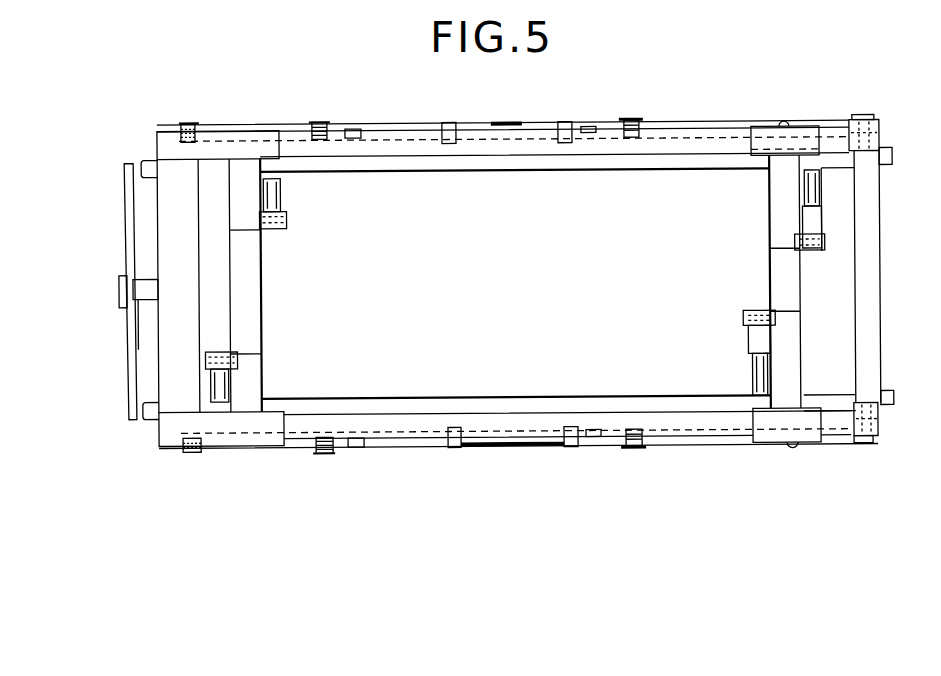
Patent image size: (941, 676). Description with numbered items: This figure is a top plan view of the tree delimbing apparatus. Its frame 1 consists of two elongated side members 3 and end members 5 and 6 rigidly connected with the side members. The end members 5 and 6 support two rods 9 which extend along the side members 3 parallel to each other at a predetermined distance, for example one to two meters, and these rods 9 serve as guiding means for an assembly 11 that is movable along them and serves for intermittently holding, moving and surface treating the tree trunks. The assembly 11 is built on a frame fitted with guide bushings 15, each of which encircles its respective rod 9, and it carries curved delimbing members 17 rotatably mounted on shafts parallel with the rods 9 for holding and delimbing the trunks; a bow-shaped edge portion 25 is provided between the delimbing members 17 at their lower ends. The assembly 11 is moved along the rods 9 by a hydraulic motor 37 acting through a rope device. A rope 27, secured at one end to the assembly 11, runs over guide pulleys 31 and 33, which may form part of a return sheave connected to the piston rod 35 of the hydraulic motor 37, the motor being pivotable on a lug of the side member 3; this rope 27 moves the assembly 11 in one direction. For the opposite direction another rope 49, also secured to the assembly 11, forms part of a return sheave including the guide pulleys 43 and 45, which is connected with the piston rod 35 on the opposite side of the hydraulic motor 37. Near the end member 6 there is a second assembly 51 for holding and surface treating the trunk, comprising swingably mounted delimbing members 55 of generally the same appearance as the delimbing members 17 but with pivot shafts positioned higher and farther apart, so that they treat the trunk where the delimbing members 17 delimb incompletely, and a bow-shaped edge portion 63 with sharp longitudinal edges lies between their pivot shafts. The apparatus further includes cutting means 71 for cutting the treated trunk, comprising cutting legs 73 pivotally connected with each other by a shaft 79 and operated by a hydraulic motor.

The frame 1 is at (167, 450).
The side member 3 is at (416, 128).
The end member 5 is at (867, 272).
The end member 6 is at (173, 347).
The rod 9 is at (680, 142).
The assembly 11 is at (770, 265).
The guide bushing 15 is at (800, 140).
The delimbing member 17 is at (810, 195).
The bow-shaped edge portion 25 is at (787, 283).
The rope 27 is at (837, 121).
The guide pulley 31 is at (878, 440).
The guide pulley 33 is at (631, 120).
The piston rod 35 is at (355, 128).
The hydraulic motor 37 is at (498, 125).
The guide pulley 43 is at (322, 120).
The guide pulley 45 is at (190, 122).
The rope 49 is at (253, 132).
The assembly 51 is at (263, 310).
The delimbing member 55 is at (278, 186).
The bow-shaped edge portion 63 is at (247, 267).
The cutting means 71 is at (120, 296).
The cutting leg 73 is at (128, 212).
The shaft 79 is at (147, 277).